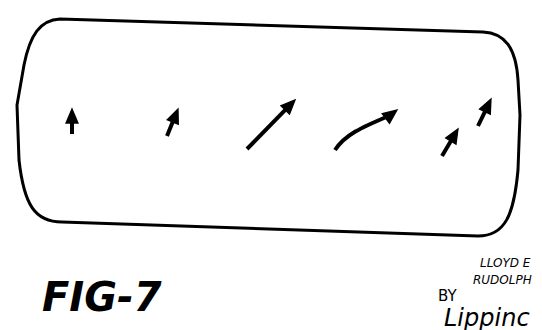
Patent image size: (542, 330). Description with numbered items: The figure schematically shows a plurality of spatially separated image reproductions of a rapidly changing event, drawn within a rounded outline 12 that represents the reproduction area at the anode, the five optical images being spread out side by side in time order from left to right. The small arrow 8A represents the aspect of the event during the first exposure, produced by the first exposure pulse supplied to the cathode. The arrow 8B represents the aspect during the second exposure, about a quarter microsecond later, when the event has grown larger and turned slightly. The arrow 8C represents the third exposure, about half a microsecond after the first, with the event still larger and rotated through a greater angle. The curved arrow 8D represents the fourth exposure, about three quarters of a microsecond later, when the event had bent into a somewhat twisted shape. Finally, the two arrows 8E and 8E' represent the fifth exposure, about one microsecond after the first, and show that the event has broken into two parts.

The plate 12 is at (268, 118).
The small arrow 8A is at (66, 128).
The arrow 8B is at (173, 131).
The arrow 8C is at (270, 135).
The arrow 8D is at (358, 132).
The arrow 8E' is at (450, 156).
The arrow 8E is at (486, 129).